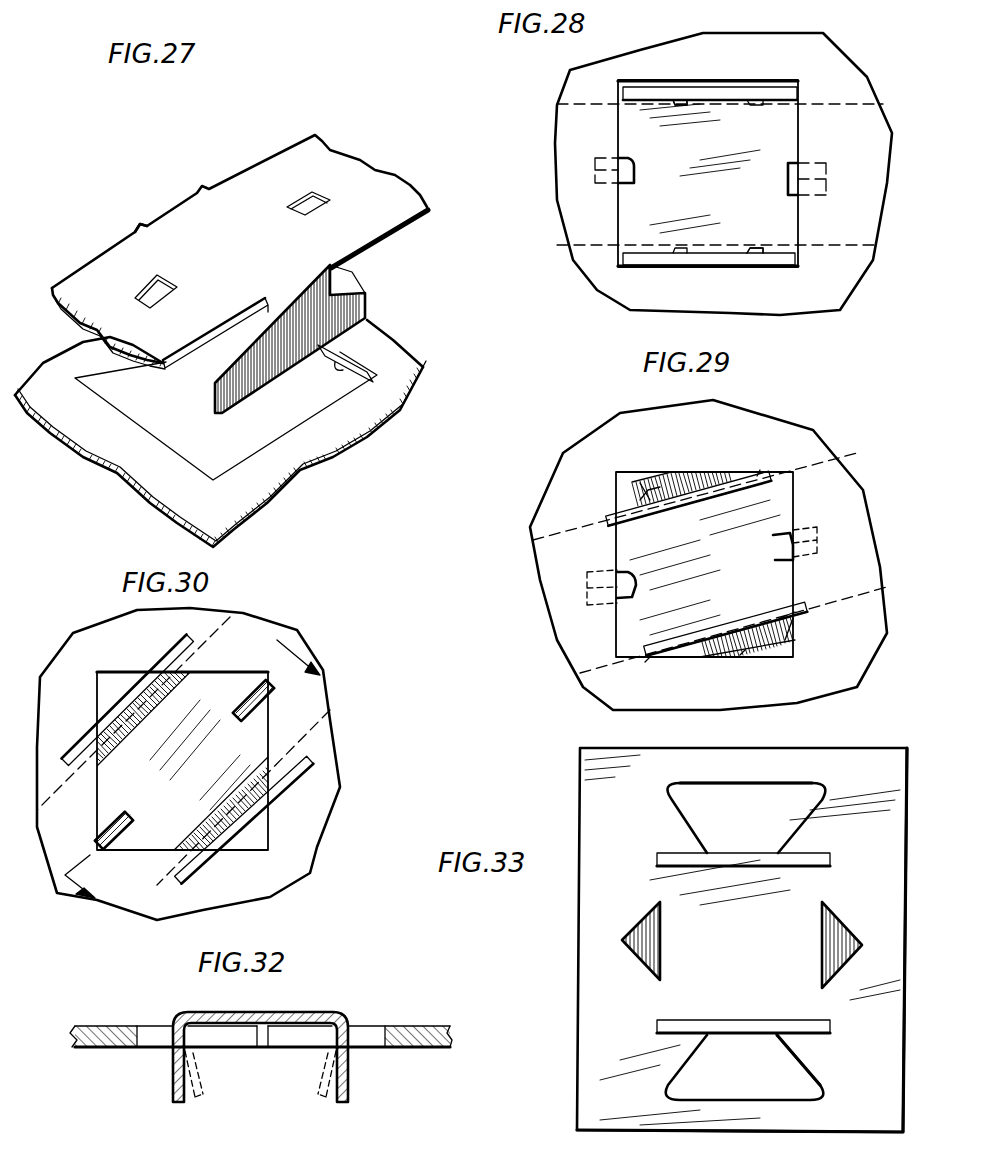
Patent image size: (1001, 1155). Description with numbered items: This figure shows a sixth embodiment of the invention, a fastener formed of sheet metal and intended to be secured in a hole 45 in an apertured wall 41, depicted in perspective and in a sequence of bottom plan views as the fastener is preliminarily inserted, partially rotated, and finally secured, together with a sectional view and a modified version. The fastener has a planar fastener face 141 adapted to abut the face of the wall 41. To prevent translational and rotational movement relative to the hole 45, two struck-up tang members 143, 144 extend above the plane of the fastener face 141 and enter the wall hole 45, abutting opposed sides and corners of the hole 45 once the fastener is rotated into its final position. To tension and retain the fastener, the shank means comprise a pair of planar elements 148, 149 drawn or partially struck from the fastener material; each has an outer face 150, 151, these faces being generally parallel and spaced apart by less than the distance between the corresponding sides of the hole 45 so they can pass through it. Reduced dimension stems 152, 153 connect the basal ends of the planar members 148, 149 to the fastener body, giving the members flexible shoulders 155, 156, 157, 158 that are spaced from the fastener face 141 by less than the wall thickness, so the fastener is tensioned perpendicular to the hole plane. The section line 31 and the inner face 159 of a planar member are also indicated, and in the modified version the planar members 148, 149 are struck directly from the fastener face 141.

In FIG. 27, the wall 41 is at (367, 405).
In FIG. 32, the wall 41 is at (427, 1053).
In FIG. 27, the hole 45 is at (393, 363).
In FIG. 30, the hole 45 is at (262, 720).
In FIG. 27, the fastener face 141 is at (253, 180).
In FIG. 33, the fastener face 141 is at (585, 982).
In FIG. 28, the tang member 143 is at (632, 175).
In FIG. 29, the tang member 143 is at (632, 580).
In FIG. 30, the tang member 143 is at (128, 813).
In FIG. 33, the tang member 143 is at (632, 932).
In FIG. 28, the tang member 144 is at (788, 177).
In FIG. 29, the tang member 144 is at (773, 545).
In FIG. 30, the tang member 144 is at (235, 712).
In FIG. 33, the tang member 144 is at (845, 933).
In FIG. 27, the planar element 148 is at (368, 308).
In FIG. 28, the planar element 148 is at (707, 258).
In FIG. 29, the planar element 148 is at (775, 645).
In FIG. 30, the planar element 148 is at (262, 800).
In FIG. 32, the planar element 148 is at (348, 1087).
In FIG. 33, the planar element 148 is at (820, 1025).
In FIG. 28, the planar element 149 is at (718, 93).
In FIG. 29, the planar element 149 is at (720, 487).
In FIG. 30, the planar element 149 is at (140, 680).
In FIG. 32, the planar element 149 is at (173, 1092).
In FIG. 33, the planar element 149 is at (765, 852).
In FIG. 28, the outer face 150 is at (757, 265).
In FIG. 33, the outer face 150 is at (725, 1025).
In FIG. 28, the outer face 151 is at (688, 90).
In FIG. 29, the outer face 151 is at (665, 492).
In FIG. 30, the outer face 151 is at (98, 712).
In FIG. 33, the outer face 151 is at (715, 850).
In FIG. 27, the stem 152 is at (267, 330).
In FIG. 29, the stem 152 is at (695, 653).
In FIG. 27, the stem 153 is at (155, 215).
In FIG. 29, the stem 153 is at (653, 488).
In FIG. 27, the flexible shoulder 155 is at (263, 383).
In FIG. 29, the flexible shoulder 155 is at (655, 655).
In FIG. 27, the flexible shoulder 156 is at (345, 290).
In FIG. 29, the flexible shoulder 156 is at (790, 623).
In FIG. 29, the flexible shoulder 157 is at (613, 507).
In FIG. 29, the flexible shoulder 158 is at (757, 475).
In FIG. 30, the inner face of leg 159 is at (225, 840).
In FIG. 30, the section line 31- 31 is at (183, 757).